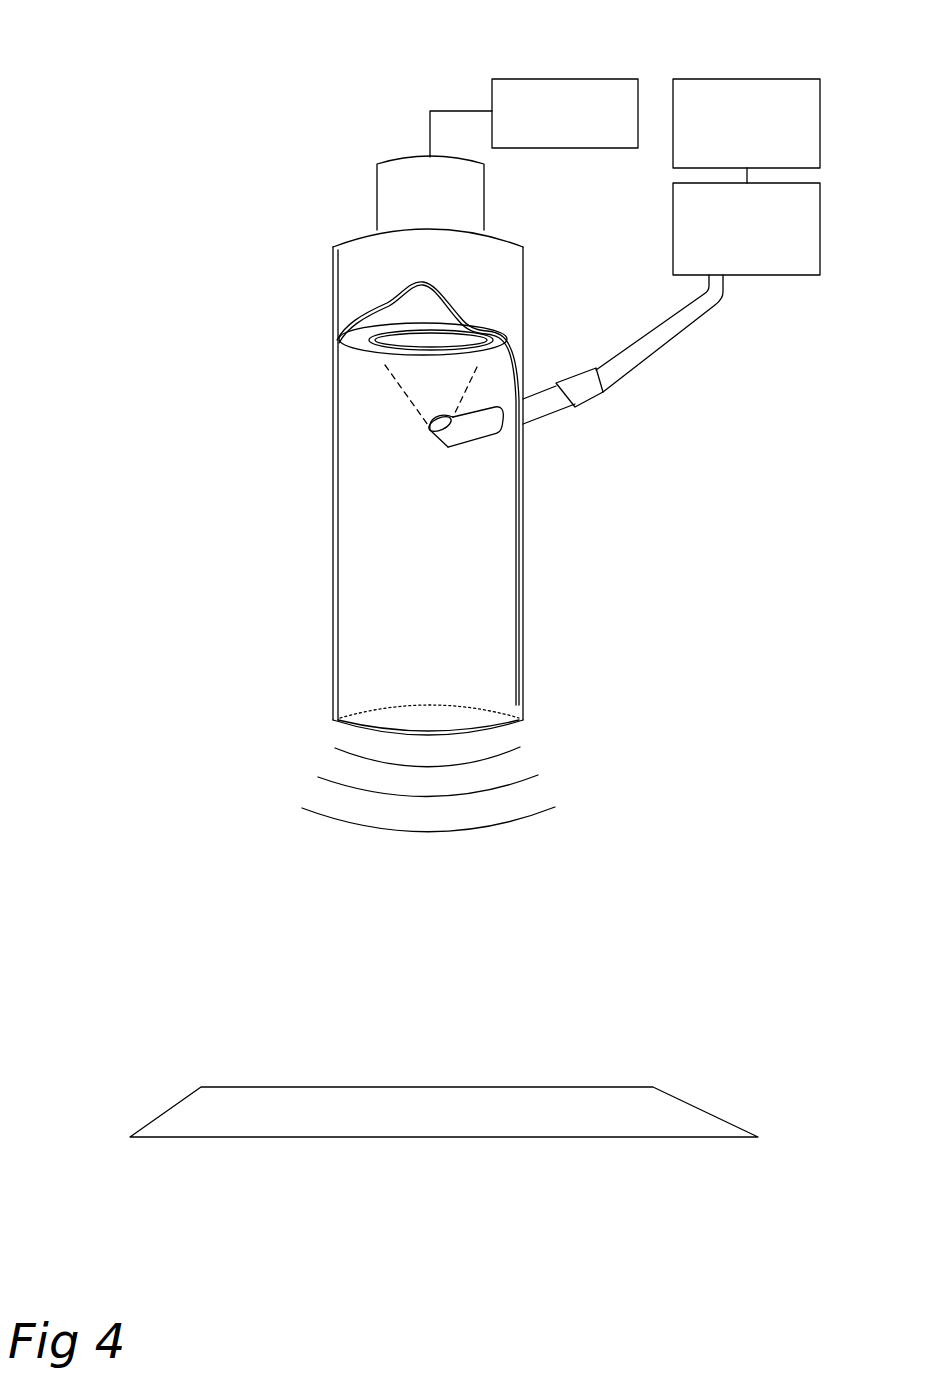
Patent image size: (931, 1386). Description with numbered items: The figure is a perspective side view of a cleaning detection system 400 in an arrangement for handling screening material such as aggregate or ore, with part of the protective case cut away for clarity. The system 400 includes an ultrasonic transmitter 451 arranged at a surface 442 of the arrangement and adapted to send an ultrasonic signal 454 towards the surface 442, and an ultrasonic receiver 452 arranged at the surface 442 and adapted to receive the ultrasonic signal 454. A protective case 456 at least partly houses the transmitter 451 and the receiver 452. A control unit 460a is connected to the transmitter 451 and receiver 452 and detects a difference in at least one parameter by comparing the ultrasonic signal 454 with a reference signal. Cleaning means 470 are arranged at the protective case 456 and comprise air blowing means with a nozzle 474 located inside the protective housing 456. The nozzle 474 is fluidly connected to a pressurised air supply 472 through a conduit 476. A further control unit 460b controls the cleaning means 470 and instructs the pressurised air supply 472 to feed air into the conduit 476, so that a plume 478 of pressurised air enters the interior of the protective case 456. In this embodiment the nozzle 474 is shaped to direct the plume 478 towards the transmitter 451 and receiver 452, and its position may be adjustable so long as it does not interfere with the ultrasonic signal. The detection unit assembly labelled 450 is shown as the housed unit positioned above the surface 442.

The cleaning detection system 400 is at (145, 72).
The print head assembly 450 is at (350, 210).
The protective case 456 is at (333, 523).
The ultrasonic transmitter 451 is at (458, 340).
The ultrasonic receiver 452 is at (395, 343).
The cleaning means 470 is at (548, 445).
The nozzle 474 is at (445, 447).
The plume 478 is at (425, 400).
The conduit 476 is at (657, 343).
The control unit 460a is at (565, 113).
The further control unit 460b is at (746, 131).
The pressurised air supply 472 is at (746, 229).
The ultrasonic signal 454 is at (590, 752).
The surface 442 is at (605, 1068).